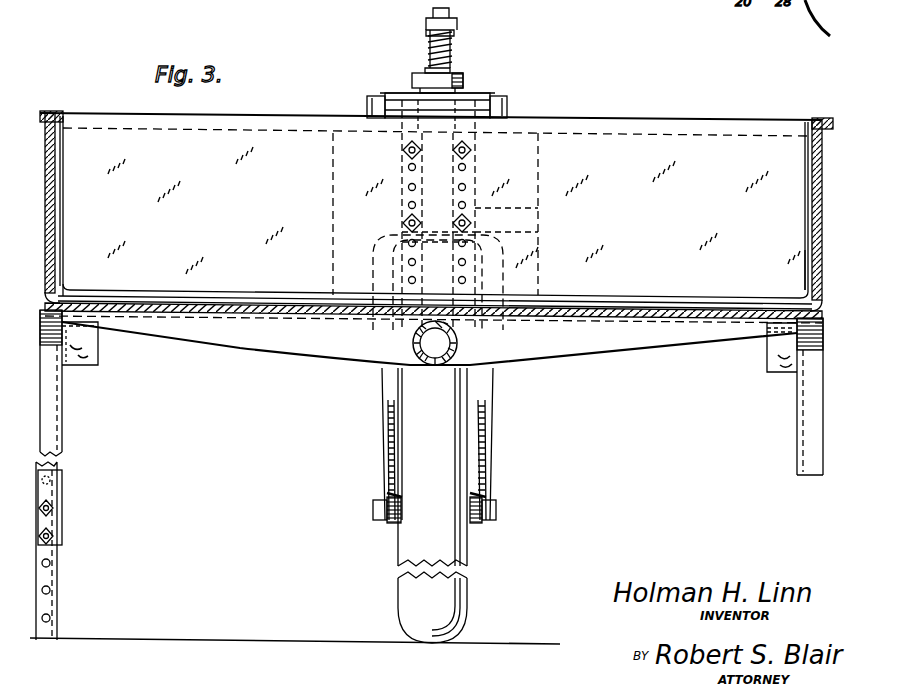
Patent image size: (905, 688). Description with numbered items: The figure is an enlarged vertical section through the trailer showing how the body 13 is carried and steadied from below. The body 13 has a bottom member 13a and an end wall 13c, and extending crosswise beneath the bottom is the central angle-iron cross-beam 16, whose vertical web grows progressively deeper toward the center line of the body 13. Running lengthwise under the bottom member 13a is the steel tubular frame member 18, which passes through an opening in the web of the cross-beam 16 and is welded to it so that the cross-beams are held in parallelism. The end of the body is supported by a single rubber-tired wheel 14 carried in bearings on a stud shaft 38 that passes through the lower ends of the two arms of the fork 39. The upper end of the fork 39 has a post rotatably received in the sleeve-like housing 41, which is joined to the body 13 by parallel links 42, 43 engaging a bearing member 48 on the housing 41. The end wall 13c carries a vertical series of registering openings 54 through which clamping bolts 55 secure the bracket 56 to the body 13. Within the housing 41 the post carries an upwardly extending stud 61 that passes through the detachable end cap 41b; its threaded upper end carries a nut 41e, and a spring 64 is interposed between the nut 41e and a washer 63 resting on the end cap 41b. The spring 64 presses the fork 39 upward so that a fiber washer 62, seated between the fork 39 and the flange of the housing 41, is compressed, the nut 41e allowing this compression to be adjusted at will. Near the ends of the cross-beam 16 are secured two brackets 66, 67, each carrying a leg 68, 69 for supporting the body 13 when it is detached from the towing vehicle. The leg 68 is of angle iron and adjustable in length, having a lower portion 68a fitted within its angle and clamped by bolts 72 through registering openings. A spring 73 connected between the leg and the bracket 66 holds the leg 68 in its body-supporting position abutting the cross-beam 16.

The body 13 is at (436, 217).
The bottom member 13a is at (322, 300).
The end wall 13c is at (685, 263).
The wheel 14 is at (470, 476).
The cross-beam 16 is at (585, 350).
The tubular frame member 18 is at (415, 348).
The stud shaft 38 is at (497, 511).
The fork 39 is at (383, 445).
The housing 41 is at (400, 176).
The end cap 41b is at (466, 80).
The nut 41e is at (452, 28).
The link 42 is at (507, 97).
The link 43 is at (370, 90).
The bearing member 48 is at (410, 95).
The registering openings 54 is at (462, 190).
The clamping bolts 55 is at (398, 150).
The bracket 56 is at (506, 220).
The stud 61 is at (455, 55).
The washer 62 is at (400, 233).
The washer 63 is at (420, 72).
The spring 64 is at (455, 42).
The bracket 66 is at (98, 352).
The bracket 67 is at (767, 360).
The leg 68 is at (64, 427).
The lower portion 68a is at (56, 602).
The leg 69 is at (800, 475).
The bolts 72 is at (60, 535).
The spring 73 is at (88, 372).